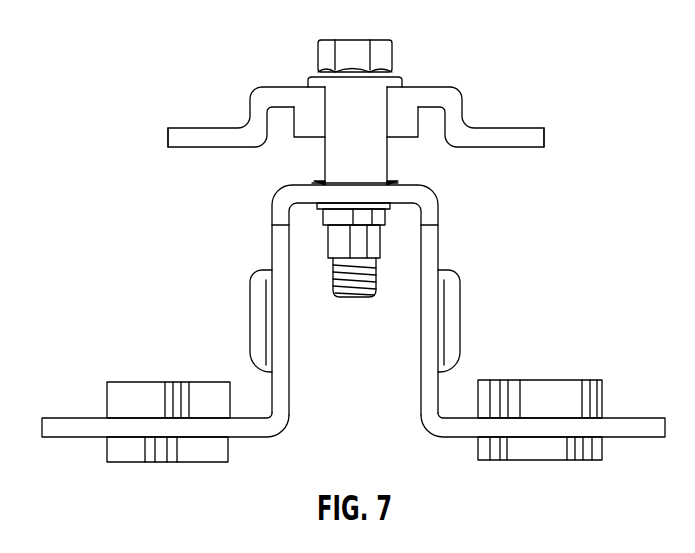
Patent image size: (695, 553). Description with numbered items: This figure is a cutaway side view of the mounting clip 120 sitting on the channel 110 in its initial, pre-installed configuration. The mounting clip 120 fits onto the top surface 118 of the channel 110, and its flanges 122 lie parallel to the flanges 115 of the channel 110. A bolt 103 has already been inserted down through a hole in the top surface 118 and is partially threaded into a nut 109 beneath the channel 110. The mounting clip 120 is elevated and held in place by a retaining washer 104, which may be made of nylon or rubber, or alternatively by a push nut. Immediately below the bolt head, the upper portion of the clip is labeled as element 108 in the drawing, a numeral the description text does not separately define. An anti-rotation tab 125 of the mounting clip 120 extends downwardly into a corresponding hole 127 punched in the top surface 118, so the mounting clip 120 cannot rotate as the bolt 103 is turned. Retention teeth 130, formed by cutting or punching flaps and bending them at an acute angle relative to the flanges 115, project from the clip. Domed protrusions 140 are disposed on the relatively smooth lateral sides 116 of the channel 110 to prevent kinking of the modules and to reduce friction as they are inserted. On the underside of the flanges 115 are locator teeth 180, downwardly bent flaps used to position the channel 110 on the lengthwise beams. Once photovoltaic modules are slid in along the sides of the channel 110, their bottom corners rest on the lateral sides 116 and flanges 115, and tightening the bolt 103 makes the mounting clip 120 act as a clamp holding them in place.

The bolt 103 is at (345, 40).
The retaining washer 104 is at (405, 118).
The upper bracket 108 is at (283, 87).
The nut 109 is at (328, 247).
The channel 110 is at (164, 258).
The flanges 115 is at (62, 417).
The lateral sides 116 is at (268, 245).
The top surface 118 is at (335, 183).
The mounting clip 120 is at (483, 61).
The flanges 122 is at (200, 128).
The anti-rotation tab 125 is at (365, 150).
The hole 127 is at (393, 184).
The retention teeth 130 is at (165, 382).
The domed protrusions 140 is at (248, 328).
The locator teeth 180 is at (105, 448).